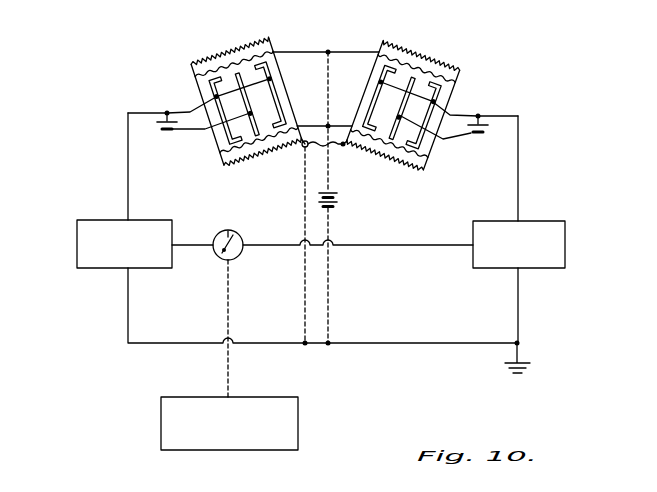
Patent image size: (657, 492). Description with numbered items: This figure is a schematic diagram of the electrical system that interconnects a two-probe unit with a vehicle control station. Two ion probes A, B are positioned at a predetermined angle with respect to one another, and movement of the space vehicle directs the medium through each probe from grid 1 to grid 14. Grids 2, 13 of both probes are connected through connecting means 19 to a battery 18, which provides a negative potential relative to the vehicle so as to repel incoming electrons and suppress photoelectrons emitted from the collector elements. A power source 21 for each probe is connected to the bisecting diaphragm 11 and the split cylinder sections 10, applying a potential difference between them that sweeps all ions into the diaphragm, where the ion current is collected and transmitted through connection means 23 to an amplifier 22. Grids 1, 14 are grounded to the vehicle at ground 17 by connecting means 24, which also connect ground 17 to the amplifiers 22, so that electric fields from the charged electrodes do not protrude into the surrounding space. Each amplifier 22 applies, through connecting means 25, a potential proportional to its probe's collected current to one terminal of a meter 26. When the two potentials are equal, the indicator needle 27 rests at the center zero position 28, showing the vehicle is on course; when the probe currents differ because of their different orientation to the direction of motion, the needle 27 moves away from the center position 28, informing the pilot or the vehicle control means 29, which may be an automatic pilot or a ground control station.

The ion probe A is at (195, 55).
The ion probe B is at (450, 61).
The grid 1 is at (226, 55).
The grid 2 is at (241, 58).
The split cylinder sections 10 is at (203, 89).
The bisecting diaphragm 11 is at (249, 97).
The grid 13 is at (253, 157).
The grid 14 is at (276, 152).
The ground 17 is at (524, 367).
The battery 18 is at (338, 201).
The connecting means 19 is at (330, 84).
The power source 21 is at (164, 133).
The amplifier 22 is at (77, 234).
The connection means 23 is at (128, 121).
The connecting means 24 is at (303, 208).
The connecting means 25 is at (189, 245).
The meter 26 is at (243, 252).
The indicator needle 27 is at (215, 256).
The center (zero) position 28 is at (228, 230).
The vehicle control means 29 is at (284, 397).